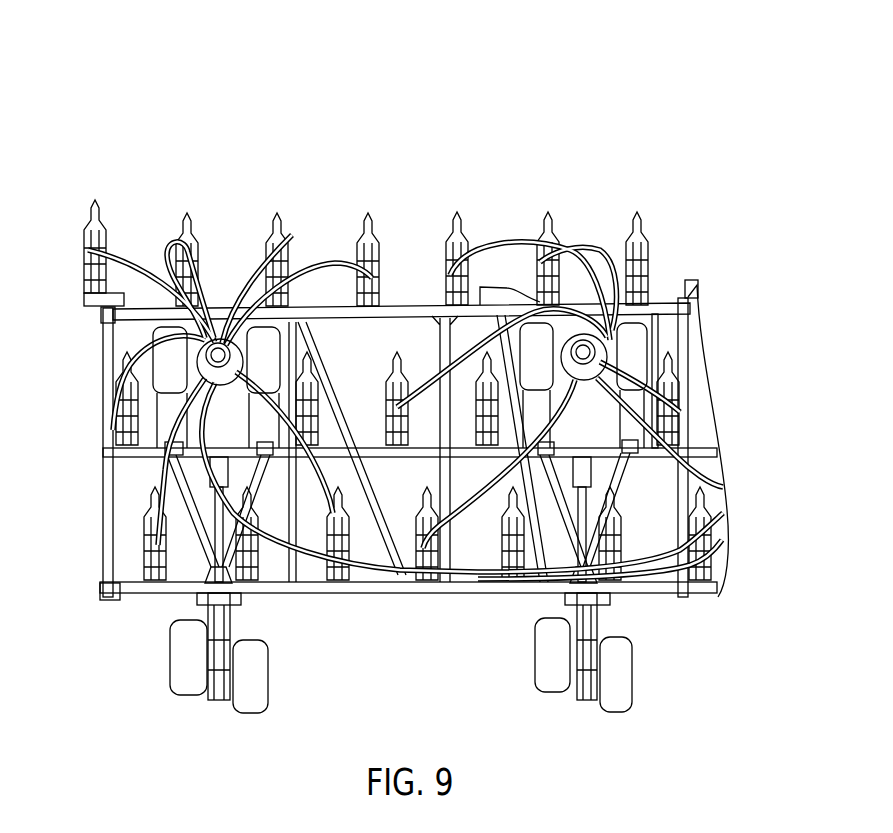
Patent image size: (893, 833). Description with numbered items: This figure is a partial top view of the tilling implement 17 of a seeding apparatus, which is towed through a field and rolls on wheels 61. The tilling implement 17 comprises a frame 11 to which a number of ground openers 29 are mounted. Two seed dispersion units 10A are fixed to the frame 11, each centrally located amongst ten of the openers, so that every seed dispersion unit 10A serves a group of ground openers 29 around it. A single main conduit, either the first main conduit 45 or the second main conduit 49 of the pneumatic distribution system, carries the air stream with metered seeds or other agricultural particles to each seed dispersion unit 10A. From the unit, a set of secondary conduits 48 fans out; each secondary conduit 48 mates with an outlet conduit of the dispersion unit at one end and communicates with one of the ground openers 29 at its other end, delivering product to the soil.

The tilling implement 17 is at (96, 116).
The ground openers 29 is at (82, 242).
The secondary conduits 48 is at (132, 273).
The frame 11 is at (105, 348).
The seed dispersion unit 10A is at (182, 370).
The second main conduit 49 is at (710, 480).
The first main conduit 45 is at (478, 587).
The wheels 61 is at (175, 660).